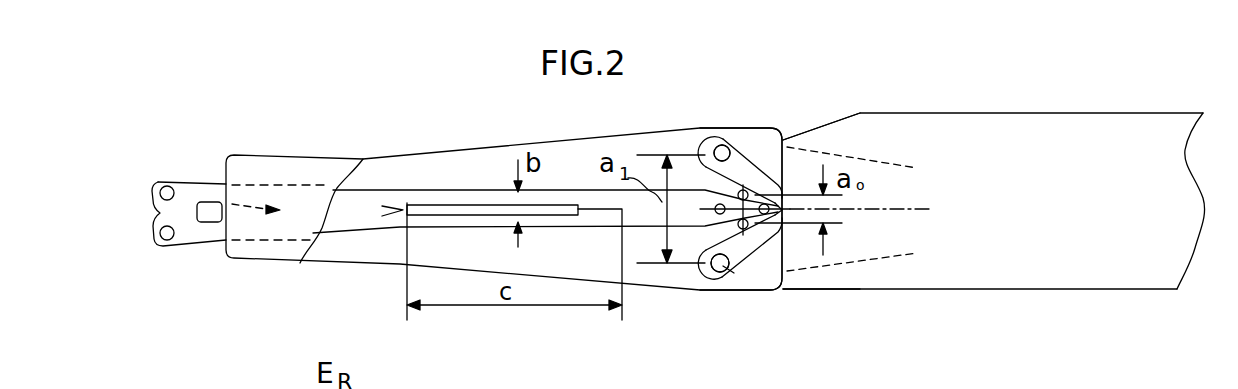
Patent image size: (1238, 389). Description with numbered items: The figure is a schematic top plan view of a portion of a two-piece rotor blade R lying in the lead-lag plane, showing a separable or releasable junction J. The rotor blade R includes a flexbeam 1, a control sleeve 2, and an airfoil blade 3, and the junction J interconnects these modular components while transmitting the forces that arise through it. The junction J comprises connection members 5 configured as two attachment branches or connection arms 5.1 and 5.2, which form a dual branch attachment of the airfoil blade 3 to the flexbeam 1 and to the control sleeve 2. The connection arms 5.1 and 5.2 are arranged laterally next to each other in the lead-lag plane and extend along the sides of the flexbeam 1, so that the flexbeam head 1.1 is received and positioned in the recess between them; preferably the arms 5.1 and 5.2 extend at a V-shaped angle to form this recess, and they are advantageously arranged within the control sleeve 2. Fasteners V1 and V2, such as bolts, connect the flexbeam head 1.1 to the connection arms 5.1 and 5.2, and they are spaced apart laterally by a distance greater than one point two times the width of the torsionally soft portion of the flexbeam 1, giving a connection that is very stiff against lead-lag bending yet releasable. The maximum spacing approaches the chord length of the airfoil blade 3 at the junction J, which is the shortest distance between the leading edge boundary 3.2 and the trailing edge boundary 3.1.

The flexbeam 1 is at (192, 196).
The flexbeam head 1.1 is at (712, 222).
The control sleeve 2 is at (292, 177).
The airfoil blade 3 is at (994, 207).
The trailing edge boundary 3.1 is at (802, 115).
The leading edge boundary 3.2 is at (823, 292).
The connection members 5 is at (798, 196).
The connection arm 5.1 is at (711, 141).
The connection arm 5.2 is at (712, 276).
The fastener V1 is at (723, 146).
The fastener V2 is at (727, 269).
The rotor blade R is at (768, 66).
The junction J is at (737, 314).